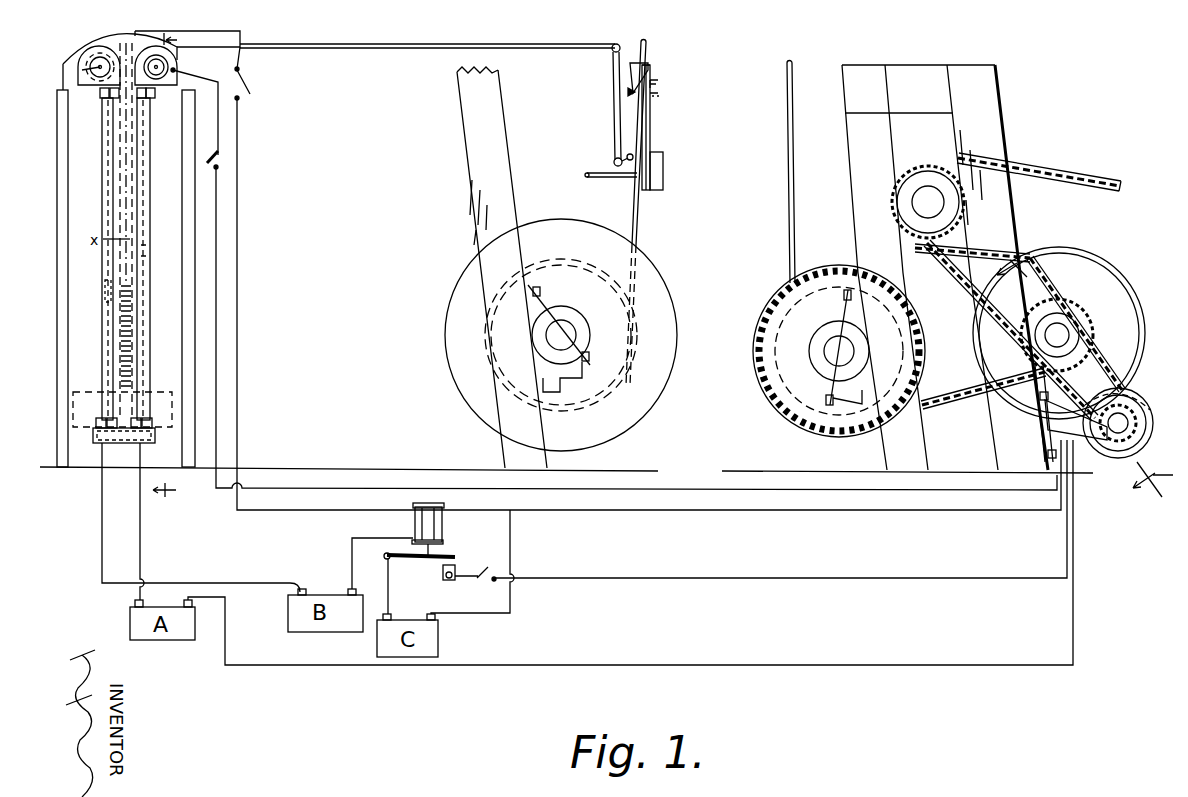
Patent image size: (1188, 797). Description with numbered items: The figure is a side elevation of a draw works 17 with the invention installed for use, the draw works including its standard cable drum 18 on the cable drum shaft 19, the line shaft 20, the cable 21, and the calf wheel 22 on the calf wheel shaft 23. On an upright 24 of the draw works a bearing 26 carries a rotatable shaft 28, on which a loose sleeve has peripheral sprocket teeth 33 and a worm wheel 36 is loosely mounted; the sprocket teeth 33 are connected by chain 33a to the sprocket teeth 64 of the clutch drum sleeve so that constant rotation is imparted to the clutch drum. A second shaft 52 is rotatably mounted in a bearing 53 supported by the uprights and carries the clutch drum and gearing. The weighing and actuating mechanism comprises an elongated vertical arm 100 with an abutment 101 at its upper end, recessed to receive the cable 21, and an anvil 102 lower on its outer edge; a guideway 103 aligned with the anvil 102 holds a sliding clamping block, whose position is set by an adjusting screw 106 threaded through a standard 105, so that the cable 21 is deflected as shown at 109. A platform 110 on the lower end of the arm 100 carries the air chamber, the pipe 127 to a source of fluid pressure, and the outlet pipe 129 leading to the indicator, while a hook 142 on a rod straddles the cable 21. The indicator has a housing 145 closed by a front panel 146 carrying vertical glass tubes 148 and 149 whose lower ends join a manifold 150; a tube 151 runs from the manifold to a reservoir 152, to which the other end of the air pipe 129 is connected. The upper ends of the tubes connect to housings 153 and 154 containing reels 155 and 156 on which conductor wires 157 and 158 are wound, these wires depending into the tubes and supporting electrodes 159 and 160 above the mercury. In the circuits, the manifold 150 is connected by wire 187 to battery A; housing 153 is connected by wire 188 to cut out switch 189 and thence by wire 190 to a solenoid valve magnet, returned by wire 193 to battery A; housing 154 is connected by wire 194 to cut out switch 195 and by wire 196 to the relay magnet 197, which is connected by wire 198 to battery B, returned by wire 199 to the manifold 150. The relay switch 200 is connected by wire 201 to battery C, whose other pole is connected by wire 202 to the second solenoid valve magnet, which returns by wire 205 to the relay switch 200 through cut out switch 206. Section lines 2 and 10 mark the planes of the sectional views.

The section line 2- 2 is at (1078, 383).
The section line 10- 10 is at (177, 265).
The draw works 17 is at (1049, 110).
The cable drum 18 is at (782, 295).
The cable drum shaft 19 is at (839, 347).
The line shaft 20 is at (928, 202).
The cable 21 is at (648, 50).
The calf wheel 22 is at (455, 340).
The calf wheel shaft 23 is at (559, 338).
The upright 24 is at (992, 147).
The bearing 26 is at (1074, 332).
The shaft 28 is at (1061, 320).
The sprocket teeth 33 is at (1012, 290).
The chain 33a is at (1093, 362).
The worm wheel 36 is at (1133, 307).
The shaft 52 is at (1130, 412).
The bearing 53 is at (1073, 430).
The sprocket teeth 64 is at (1105, 396).
The arm 100 is at (652, 120).
The abutment 101 is at (633, 72).
The anvil 102 is at (628, 92).
The guideway 103 is at (653, 95).
The standard 105 is at (689, 123).
The adjusting screw 106 is at (658, 83).
The deflection of cable 109 is at (659, 66).
The platform 110 is at (640, 195).
The pipe 127 is at (585, 175).
The outlet pipe 129 is at (360, 48).
The hook 142 is at (627, 156).
The housing 145 is at (53, 290).
The panel 146 is at (87, 347).
The tube 148 is at (145, 368).
The tube 149 is at (104, 367).
The manifold 150 is at (97, 443).
The tube 151 is at (130, 443).
The reservoir 152 is at (157, 410).
The housing 153 is at (178, 60).
The housing 154 is at (92, 53).
The reel 155 is at (173, 72).
The reel 156 is at (82, 70).
The conductor wire 157 is at (145, 188).
The conductor wire 158 is at (109, 207).
The electrode 159 is at (144, 250).
The electrode 160 is at (108, 297).
The wire 187 is at (150, 537).
The wire 188 is at (217, 122).
The cut out switch 189 is at (218, 156).
The wire 190 is at (213, 260).
The wire 193 is at (328, 675).
The wire 194 is at (240, 37).
The cut out switch 195 is at (245, 73).
The wire 196 is at (239, 190).
The relay magnet 197 is at (441, 520).
The wire 198 is at (352, 558).
The wire 199 is at (258, 563).
The relay switch 200 is at (420, 560).
The wire 201 is at (389, 597).
The wire 202 is at (858, 512).
The wire 205 is at (124, 300).
The cut out switch 206 is at (131, 330).